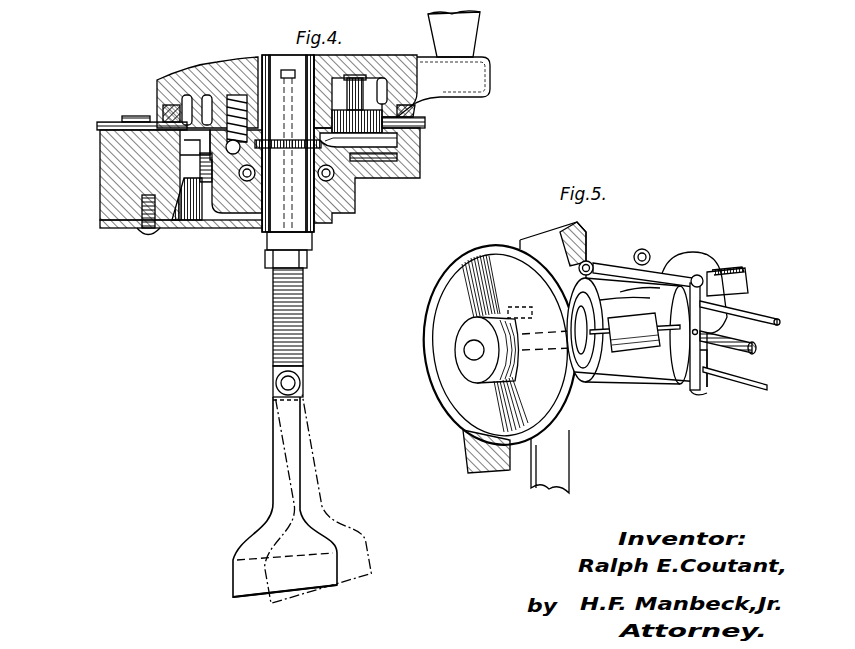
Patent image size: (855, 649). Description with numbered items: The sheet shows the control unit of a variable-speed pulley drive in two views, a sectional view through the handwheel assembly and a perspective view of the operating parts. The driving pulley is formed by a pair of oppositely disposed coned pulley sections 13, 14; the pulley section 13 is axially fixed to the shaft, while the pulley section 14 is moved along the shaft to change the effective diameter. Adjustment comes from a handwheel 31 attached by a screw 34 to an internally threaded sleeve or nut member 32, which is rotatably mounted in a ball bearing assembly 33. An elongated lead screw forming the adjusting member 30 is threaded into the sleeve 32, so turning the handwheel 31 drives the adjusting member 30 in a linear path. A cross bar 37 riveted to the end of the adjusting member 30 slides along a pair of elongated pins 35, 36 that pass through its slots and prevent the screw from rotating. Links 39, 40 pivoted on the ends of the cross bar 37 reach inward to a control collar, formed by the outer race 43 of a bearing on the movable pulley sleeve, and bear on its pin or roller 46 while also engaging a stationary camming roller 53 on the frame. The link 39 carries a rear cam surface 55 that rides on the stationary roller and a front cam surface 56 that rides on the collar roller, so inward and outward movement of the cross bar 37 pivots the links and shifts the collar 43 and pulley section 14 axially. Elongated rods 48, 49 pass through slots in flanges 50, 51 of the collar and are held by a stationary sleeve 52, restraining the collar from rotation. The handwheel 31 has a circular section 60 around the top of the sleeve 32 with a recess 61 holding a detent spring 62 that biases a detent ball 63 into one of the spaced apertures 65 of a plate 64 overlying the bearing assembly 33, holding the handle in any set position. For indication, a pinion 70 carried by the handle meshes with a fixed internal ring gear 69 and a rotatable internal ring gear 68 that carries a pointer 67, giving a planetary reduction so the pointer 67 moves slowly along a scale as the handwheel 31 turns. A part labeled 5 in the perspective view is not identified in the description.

In FIG. 5, the belt 5 is at (498, 508).
In FIG. 5, the coned pulley section 13 is at (470, 262).
In FIG. 5, the coned pulley section 14 is at (548, 242).
In FIG. 4, the adjusting member 30 is at (305, 307).
In FIG. 5, the adjusting member 30 is at (742, 347).
In FIG. 4, the handwheel 31 is at (382, 74).
In FIG. 4, the internally threaded sleeve 32 is at (292, 237).
In FIG. 4, the ball bearing assembly 33 is at (244, 183).
In FIG. 4, the screw 34 is at (277, 55).
In FIG. 5, the elongated pin 35 is at (757, 313).
In FIG. 5, the elongated pin 36 is at (762, 388).
In FIG. 5, the cross bar 37 is at (710, 358).
In FIG. 4, the link 39 is at (300, 448).
In FIG. 5, the link 39 is at (606, 260).
In FIG. 5, the link 40 is at (690, 392).
In FIG. 5, the control collar 43 is at (625, 292).
In FIG. 5, the roller 46 is at (588, 261).
In FIG. 5, the elongated rod 48 is at (613, 365).
In FIG. 5, the elongated rod 49 is at (512, 318).
In FIG. 5, the flange 50 is at (645, 352).
In FIG. 5, the flange 51 is at (537, 288).
In FIG. 5, the stationary sleeve 52 is at (697, 265).
In FIG. 5, the stationary camming roller 53 is at (644, 249).
In FIG. 4, the cam surface 55 is at (232, 587).
In FIG. 4, the cam surface 56 is at (338, 557).
In FIG. 4, the circular section 60 is at (172, 80).
In FIG. 4, the recess 61 is at (240, 95).
In FIG. 4, the detent spring 62 is at (226, 104).
In FIG. 4, the detent ball 63 is at (192, 205).
In FIG. 4, the plate 64 is at (397, 157).
In FIG. 4, the apertures 65 is at (397, 146).
In FIG. 4, the pointer 67 is at (128, 116).
In FIG. 4, the internal ring gear 68 is at (425, 121).
In FIG. 4, the fixed internal ring gear 69 is at (97, 127).
In FIG. 4, the pinion 70 is at (405, 105).